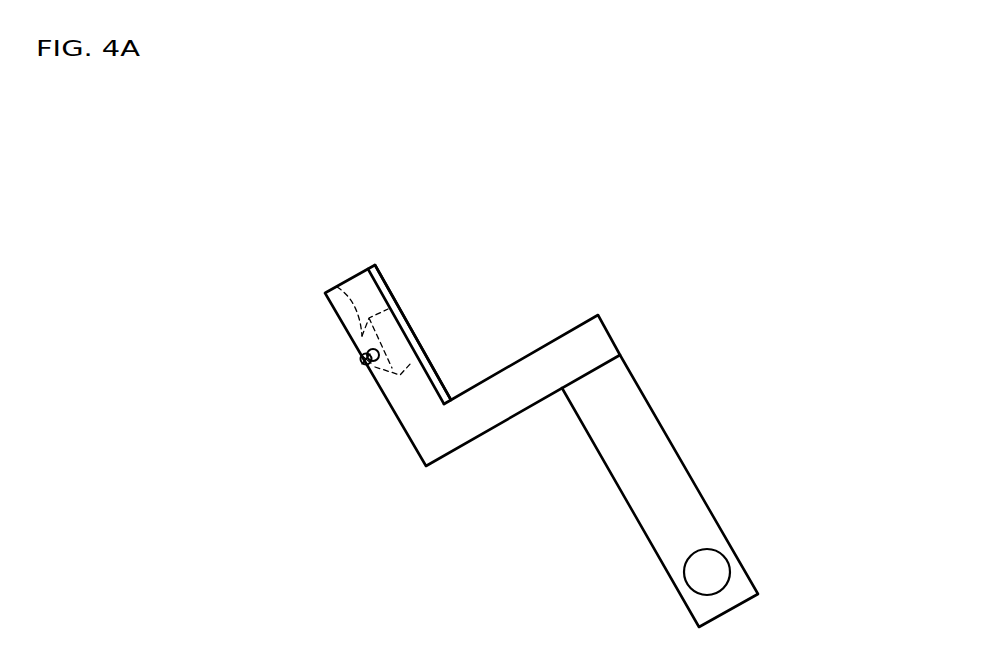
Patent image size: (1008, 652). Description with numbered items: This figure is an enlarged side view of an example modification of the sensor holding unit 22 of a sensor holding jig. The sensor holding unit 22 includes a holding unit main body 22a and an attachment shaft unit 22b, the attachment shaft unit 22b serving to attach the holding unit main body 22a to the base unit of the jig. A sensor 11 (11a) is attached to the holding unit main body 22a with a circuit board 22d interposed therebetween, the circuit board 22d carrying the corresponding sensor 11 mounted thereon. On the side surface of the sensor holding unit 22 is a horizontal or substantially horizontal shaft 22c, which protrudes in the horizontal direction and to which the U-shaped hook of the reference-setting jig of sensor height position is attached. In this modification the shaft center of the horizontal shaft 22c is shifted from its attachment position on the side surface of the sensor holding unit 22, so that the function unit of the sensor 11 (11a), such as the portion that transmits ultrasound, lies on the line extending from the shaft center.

The sensor holding unit 22 is at (460, 361).
The holding unit main body 22a is at (415, 443).
The attachment shaft unit 22b is at (670, 437).
The horizontal or substantially horizontal shaft 22c is at (365, 362).
The circuit board 22d is at (395, 290).
The sensor 11 is at (324, 281).
The sensor 11a is at (337, 287).